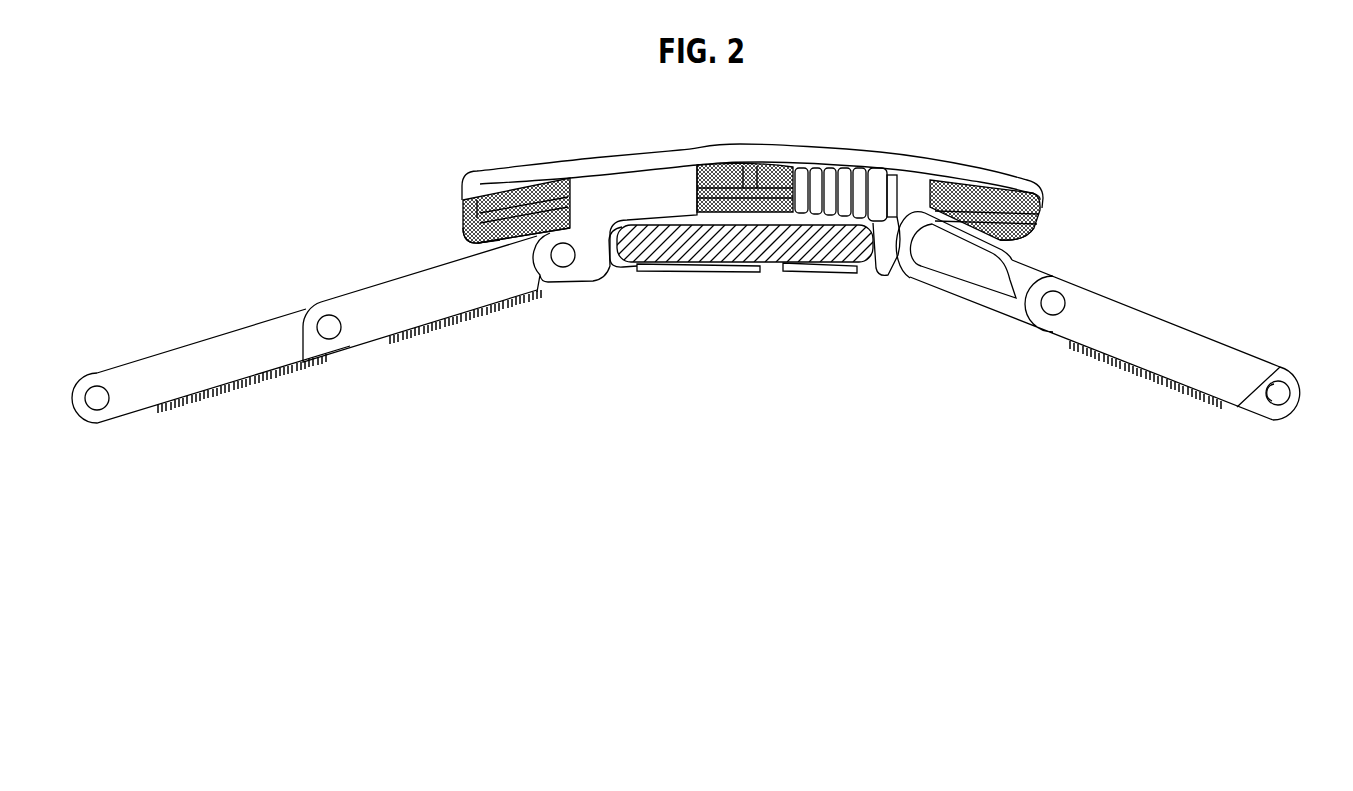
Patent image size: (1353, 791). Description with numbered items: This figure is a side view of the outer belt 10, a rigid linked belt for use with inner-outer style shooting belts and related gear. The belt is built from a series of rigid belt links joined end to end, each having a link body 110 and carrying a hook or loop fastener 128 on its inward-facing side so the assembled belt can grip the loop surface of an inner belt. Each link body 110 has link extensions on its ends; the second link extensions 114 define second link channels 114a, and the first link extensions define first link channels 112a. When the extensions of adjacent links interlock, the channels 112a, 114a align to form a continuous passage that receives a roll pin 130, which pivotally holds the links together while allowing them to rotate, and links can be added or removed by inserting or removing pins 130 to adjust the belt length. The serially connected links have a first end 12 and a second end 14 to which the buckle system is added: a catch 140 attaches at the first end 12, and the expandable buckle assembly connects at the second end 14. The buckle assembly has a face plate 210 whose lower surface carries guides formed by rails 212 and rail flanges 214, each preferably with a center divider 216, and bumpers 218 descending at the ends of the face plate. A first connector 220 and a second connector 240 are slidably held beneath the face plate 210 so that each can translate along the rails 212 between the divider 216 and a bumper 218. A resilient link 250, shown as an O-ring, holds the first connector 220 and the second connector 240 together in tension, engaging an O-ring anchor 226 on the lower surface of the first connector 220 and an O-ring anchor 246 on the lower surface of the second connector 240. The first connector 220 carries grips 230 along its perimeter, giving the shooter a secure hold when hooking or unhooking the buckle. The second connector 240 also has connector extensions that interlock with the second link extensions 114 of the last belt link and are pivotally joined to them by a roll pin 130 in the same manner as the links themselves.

The outer belt 10 is at (372, 130).
The first end 12 is at (956, 310).
The second end 14 is at (562, 306).
The link body 110 is at (219, 373).
The first link channel 112a is at (95, 402).
The second link extension 114 is at (1257, 402).
The second link channel 114a is at (1288, 397).
The hook or loop fastener 128 is at (250, 392).
The roll pin 130 is at (331, 330).
The catch 140 is at (952, 255).
The face plate 210 is at (618, 126).
The rail 212 is at (547, 192).
The rail flange 214 is at (483, 239).
The center divider 216 is at (750, 168).
The bumper 218 is at (478, 218).
The first connector 220 is at (893, 258).
The O-ring anchor 226 is at (840, 268).
The grips 230 is at (848, 183).
The second connector 240 is at (627, 209).
The O-ring anchor 246 is at (670, 268).
The resilient link 250 is at (746, 237).